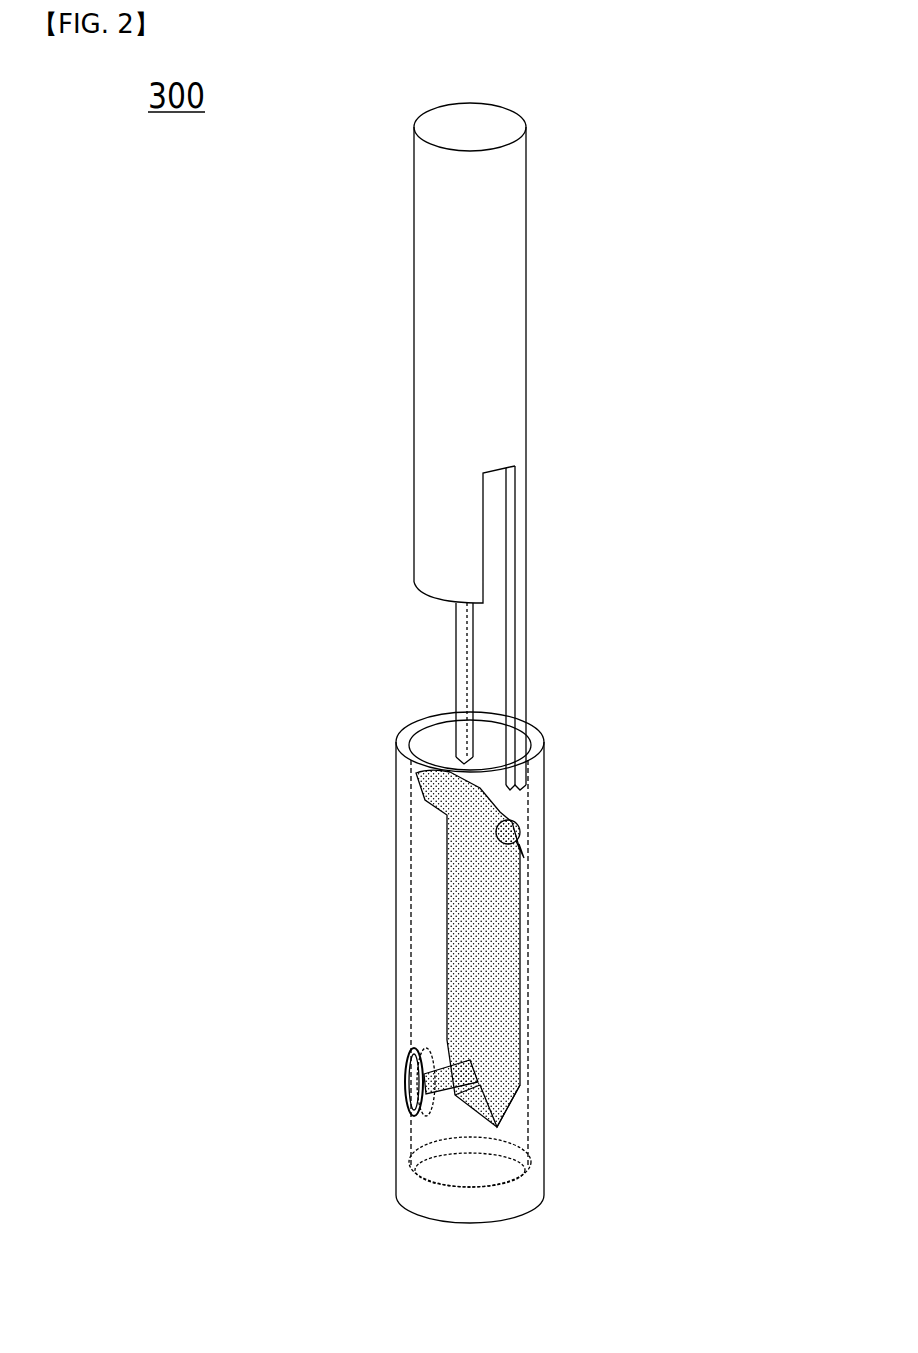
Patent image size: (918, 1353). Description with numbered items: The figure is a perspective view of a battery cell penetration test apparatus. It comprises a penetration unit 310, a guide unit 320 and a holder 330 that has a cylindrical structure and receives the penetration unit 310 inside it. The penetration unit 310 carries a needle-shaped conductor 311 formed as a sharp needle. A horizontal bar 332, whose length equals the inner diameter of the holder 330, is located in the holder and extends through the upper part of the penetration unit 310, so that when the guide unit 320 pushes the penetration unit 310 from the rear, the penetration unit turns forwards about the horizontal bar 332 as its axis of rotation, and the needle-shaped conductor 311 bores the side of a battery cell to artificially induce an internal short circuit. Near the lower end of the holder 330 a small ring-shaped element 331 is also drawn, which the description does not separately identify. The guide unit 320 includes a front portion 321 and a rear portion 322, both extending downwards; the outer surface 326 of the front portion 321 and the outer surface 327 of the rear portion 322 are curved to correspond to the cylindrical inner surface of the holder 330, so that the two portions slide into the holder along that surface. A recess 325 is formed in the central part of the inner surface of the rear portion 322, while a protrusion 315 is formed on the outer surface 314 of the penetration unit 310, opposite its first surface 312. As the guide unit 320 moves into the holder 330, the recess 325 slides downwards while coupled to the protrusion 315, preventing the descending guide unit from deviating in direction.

The guide unit 320 is at (556, 366).
The front portion 321 is at (318, 462).
The outer surface of the front portion 326 is at (425, 540).
The rear portion 322 is at (629, 465).
The recess 325 is at (454, 631).
The outer surface of the rear portion 327 is at (522, 632).
The holder 330 is at (544, 1112).
The ring member 331 is at (405, 1064).
The horizontal bar 332 is at (512, 845).
The penetration unit 310 is at (261, 883).
The first surface 312 is at (447, 920).
The needle-shaped conductor 311 is at (445, 1070).
The outer surface of the penetration unit 314 is at (542, 917).
The protrusion 315 is at (515, 1027).